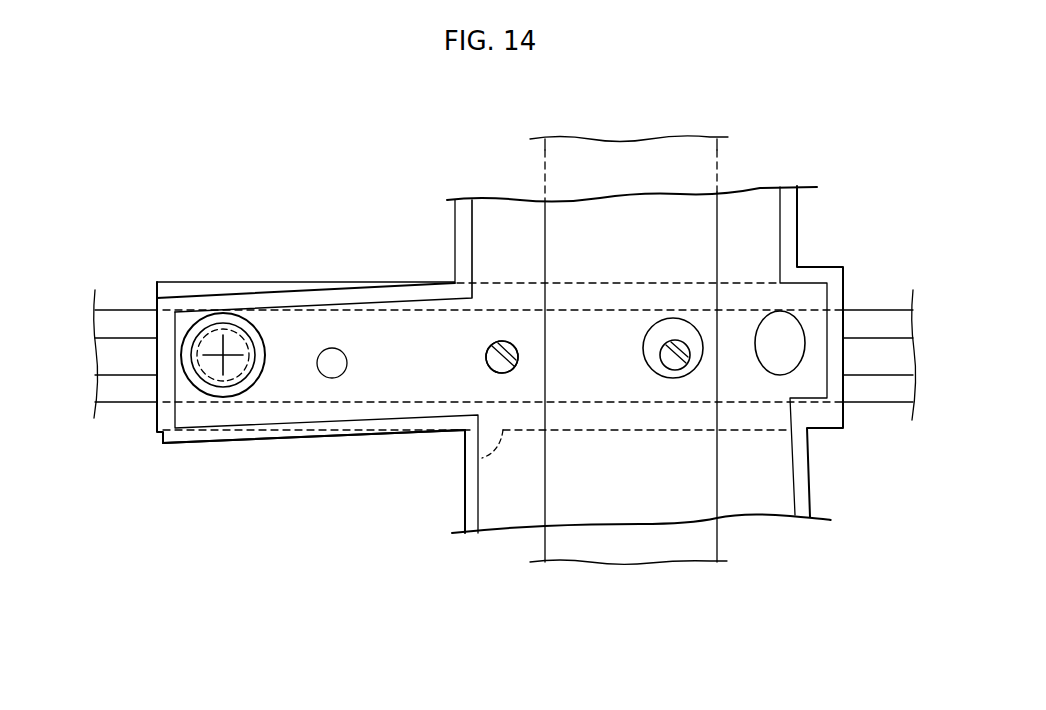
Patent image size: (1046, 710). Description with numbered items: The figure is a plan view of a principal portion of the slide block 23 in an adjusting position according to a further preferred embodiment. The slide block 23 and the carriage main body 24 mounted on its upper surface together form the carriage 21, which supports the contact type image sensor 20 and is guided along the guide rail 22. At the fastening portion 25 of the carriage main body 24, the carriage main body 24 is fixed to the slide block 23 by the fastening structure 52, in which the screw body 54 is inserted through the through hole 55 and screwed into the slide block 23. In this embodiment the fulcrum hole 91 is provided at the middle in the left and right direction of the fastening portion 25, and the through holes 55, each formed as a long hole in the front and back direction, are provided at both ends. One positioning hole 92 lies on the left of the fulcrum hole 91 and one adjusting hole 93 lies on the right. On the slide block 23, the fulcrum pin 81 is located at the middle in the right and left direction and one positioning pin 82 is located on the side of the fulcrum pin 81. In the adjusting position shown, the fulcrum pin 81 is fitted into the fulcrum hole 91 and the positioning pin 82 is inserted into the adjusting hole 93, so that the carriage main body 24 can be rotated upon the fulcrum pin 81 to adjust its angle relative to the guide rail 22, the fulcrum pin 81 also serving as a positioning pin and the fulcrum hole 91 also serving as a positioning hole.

The contact type image sensor 20 is at (717, 163).
The carriage 21 is at (500, 359).
The guide rail 22 is at (877, 388).
The slide block 23 is at (478, 462).
The carriage main body 24 is at (452, 488).
The fastening portion 25 is at (328, 440).
The fastening structure 52 is at (220, 411).
The screw body 54 is at (210, 370).
The through hole 55 is at (222, 393).
The fulcrum pin 81 is at (486, 345).
The positioning pin 82 is at (668, 365).
The fulcrum hole 91 is at (469, 368).
The positioning hole 92 is at (334, 360).
The adjusting hole 93 is at (665, 325).